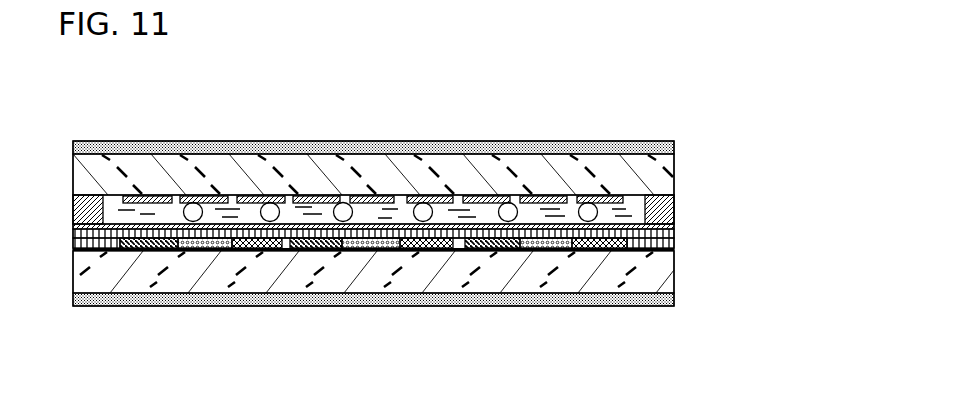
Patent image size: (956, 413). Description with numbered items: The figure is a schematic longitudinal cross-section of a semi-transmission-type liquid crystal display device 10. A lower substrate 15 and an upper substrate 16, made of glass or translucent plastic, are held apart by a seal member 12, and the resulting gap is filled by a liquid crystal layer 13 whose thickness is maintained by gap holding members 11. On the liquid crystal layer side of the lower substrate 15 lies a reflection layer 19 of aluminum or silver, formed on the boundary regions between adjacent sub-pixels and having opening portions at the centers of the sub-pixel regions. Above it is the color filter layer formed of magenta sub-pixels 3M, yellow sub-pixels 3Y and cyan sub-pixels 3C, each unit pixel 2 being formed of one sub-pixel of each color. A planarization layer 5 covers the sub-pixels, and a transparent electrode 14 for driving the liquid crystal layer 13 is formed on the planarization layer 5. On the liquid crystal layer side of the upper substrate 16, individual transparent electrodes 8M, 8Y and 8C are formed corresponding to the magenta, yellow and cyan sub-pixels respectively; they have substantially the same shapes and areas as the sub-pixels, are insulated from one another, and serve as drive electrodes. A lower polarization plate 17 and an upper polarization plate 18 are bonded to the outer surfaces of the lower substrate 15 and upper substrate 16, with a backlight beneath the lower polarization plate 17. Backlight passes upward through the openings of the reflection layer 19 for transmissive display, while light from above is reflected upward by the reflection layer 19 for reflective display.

The liquid crystal display device 10 is at (458, 80).
The upper polarization plate 18 is at (645, 141).
The upper substrate 16 is at (665, 165).
The seal member 12 is at (672, 202).
The transparent electrode 8M is at (152, 198).
The transparent electrode 8Y is at (208, 198).
The transparent electrode 8C is at (272, 198).
The gap holding member 11 is at (514, 204).
The liquid crystal layer 13 is at (370, 207).
The transparent electrode 14 is at (672, 227).
The planarization layer 5 is at (672, 238).
The unit pixel 2 is at (125, 351).
The magenta sub-pixel 3M is at (140, 251).
The yellow sub-pixel 3Y is at (200, 251).
The cyan sub-pixel 3C is at (255, 251).
The reflection layer 19 is at (393, 251).
The lower substrate 15 is at (672, 263).
The lower polarization plate 17 is at (641, 307).